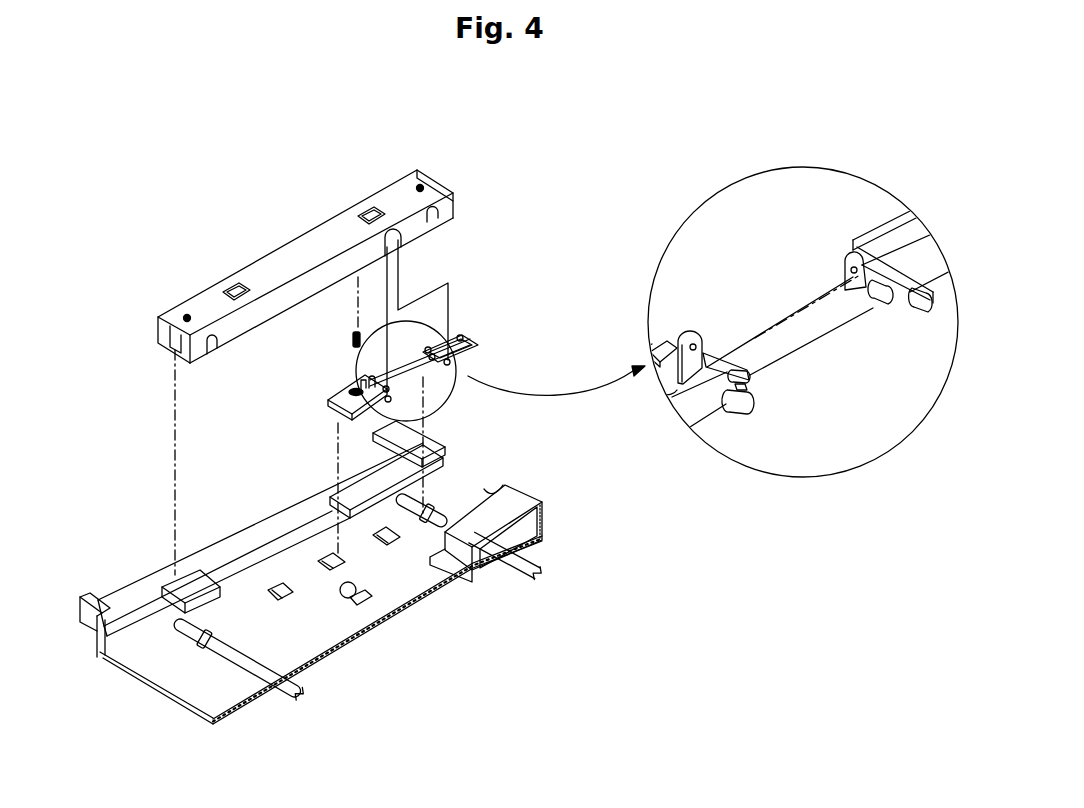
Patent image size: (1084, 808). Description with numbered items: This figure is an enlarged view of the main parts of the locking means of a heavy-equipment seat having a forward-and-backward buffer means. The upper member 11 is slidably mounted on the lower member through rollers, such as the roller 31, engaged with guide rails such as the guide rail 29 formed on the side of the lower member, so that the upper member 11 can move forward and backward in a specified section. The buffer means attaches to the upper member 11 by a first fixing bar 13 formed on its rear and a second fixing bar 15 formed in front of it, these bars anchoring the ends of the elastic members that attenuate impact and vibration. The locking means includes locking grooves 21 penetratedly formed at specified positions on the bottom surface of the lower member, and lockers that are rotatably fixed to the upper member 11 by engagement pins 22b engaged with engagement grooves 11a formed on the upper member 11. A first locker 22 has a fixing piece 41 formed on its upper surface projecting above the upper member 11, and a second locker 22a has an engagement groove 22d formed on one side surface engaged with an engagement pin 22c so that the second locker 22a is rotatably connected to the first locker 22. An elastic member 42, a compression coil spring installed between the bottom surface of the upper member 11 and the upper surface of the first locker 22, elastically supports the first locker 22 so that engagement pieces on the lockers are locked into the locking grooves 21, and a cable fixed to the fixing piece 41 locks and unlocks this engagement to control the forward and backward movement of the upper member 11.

The upper member 11 is at (224, 255).
The engagement grooves 11a is at (403, 238).
The first fixing bar 13 is at (447, 517).
The second fixing bar 15 is at (283, 681).
The locking grooves 21 is at (383, 537).
The first locker 22 is at (356, 422).
The second locker 22a is at (499, 344).
The engagement pins 22b is at (392, 398).
The engagement pin 22c is at (400, 326).
The engagement groove 22d is at (440, 336).
The guide rail 29 is at (116, 652).
The roller 31 is at (330, 513).
The fixing piece 41 is at (357, 376).
The elastic member 42 is at (353, 341).